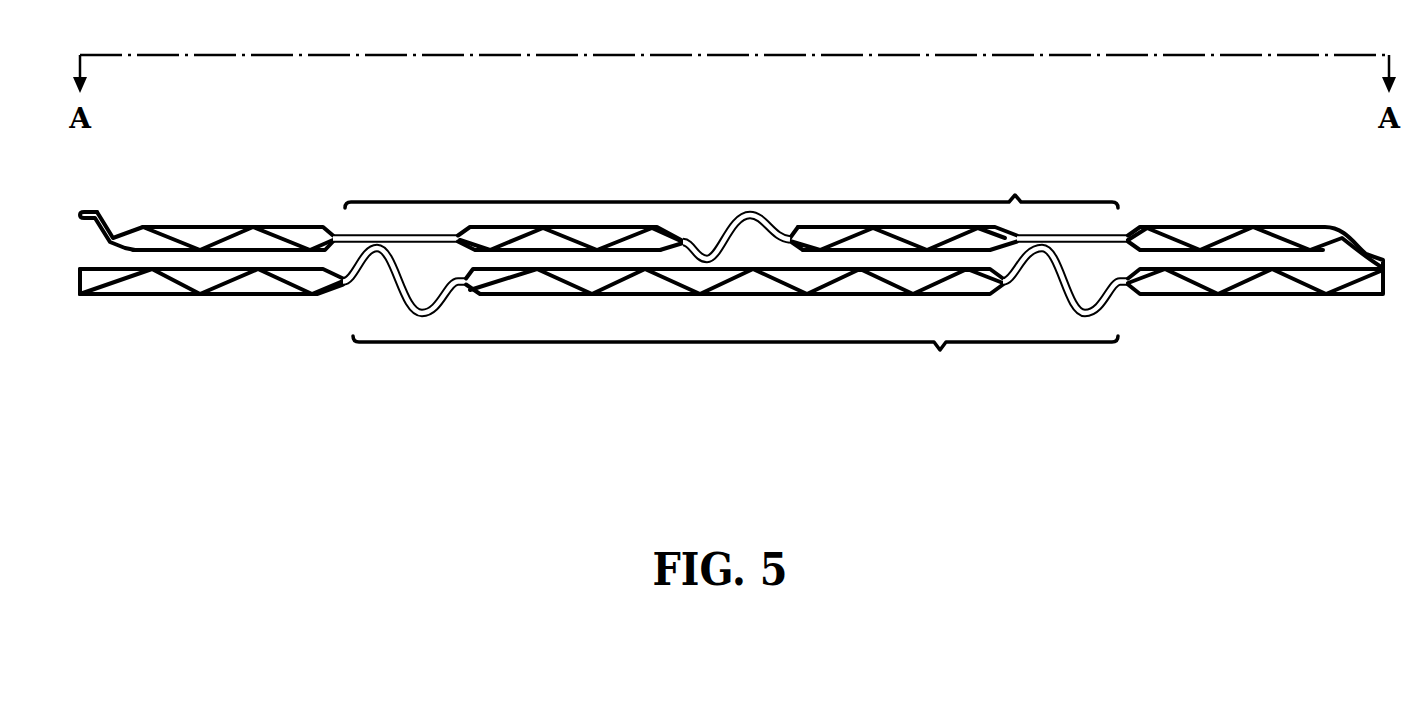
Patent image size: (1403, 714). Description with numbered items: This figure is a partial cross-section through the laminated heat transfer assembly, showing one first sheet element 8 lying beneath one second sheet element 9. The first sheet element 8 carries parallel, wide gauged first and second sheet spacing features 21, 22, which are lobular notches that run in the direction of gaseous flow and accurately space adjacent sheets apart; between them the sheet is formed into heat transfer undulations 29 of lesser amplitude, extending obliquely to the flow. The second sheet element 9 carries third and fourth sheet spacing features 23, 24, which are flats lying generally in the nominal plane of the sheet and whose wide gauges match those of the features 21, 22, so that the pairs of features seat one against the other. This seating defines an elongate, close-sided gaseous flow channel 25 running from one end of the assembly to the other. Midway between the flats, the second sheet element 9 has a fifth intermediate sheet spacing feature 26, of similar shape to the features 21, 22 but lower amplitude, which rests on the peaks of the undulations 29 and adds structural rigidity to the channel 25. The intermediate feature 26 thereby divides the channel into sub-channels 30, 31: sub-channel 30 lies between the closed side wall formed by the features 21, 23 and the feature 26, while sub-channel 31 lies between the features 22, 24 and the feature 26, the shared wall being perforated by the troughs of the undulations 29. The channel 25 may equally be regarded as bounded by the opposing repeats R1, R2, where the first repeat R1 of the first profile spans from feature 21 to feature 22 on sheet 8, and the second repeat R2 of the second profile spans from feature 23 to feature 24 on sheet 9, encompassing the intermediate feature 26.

The first sheet element 8 is at (60, 283).
The second sheet element 9 is at (60, 228).
The first sheet spacing feature 21 is at (422, 314).
The second sheet spacing feature 22 is at (1085, 314).
The third sheet spacing feature 23 is at (416, 237).
The fourth sheet spacing feature 24 is at (1079, 237).
The gaseous flow channel 25 is at (633, 258).
The fifth intermediate sheet spacing feature 26 is at (738, 238).
The heat transfer undulations 29 is at (627, 285).
The sub-channel 30 is at (558, 258).
The sub-channel 31 is at (910, 258).
The first repeat R1 is at (735, 363).
The second repeat R2 is at (731, 182).